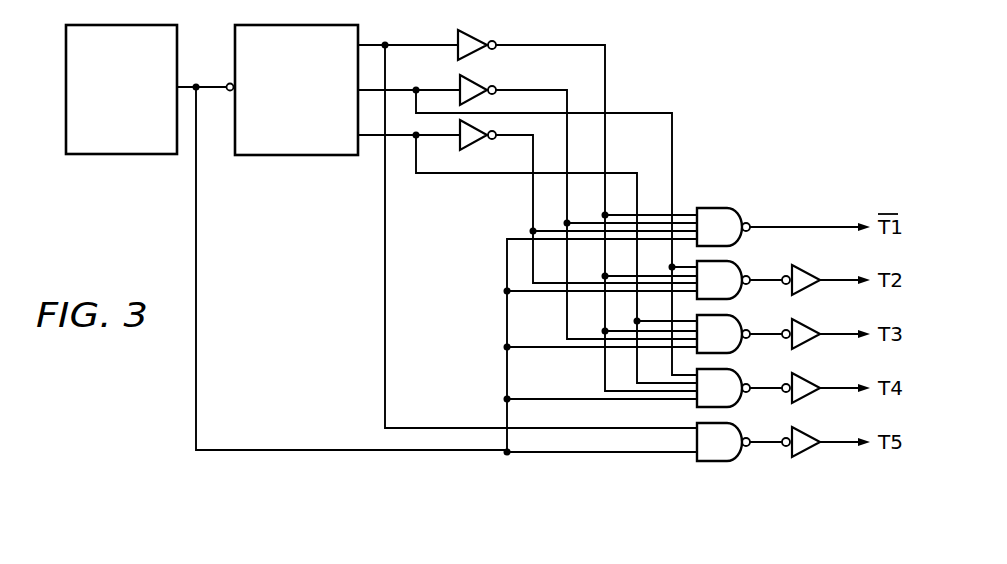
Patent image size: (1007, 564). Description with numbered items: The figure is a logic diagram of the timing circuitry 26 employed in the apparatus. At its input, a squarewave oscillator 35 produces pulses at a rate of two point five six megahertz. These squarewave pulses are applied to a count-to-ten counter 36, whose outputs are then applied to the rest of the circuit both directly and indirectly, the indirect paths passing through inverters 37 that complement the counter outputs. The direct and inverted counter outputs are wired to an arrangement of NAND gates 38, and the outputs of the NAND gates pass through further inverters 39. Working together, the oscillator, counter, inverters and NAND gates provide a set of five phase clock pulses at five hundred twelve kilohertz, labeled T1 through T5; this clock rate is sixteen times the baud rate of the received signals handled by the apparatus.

The squarewave oscillator 35 is at (118, 156).
The count-to-10 counter 36 is at (298, 157).
The inverters 37 is at (503, 30).
The timing circuitry 26 is at (710, 106).
The NAND gates 38 is at (727, 197).
The inverters 39 is at (784, 462).